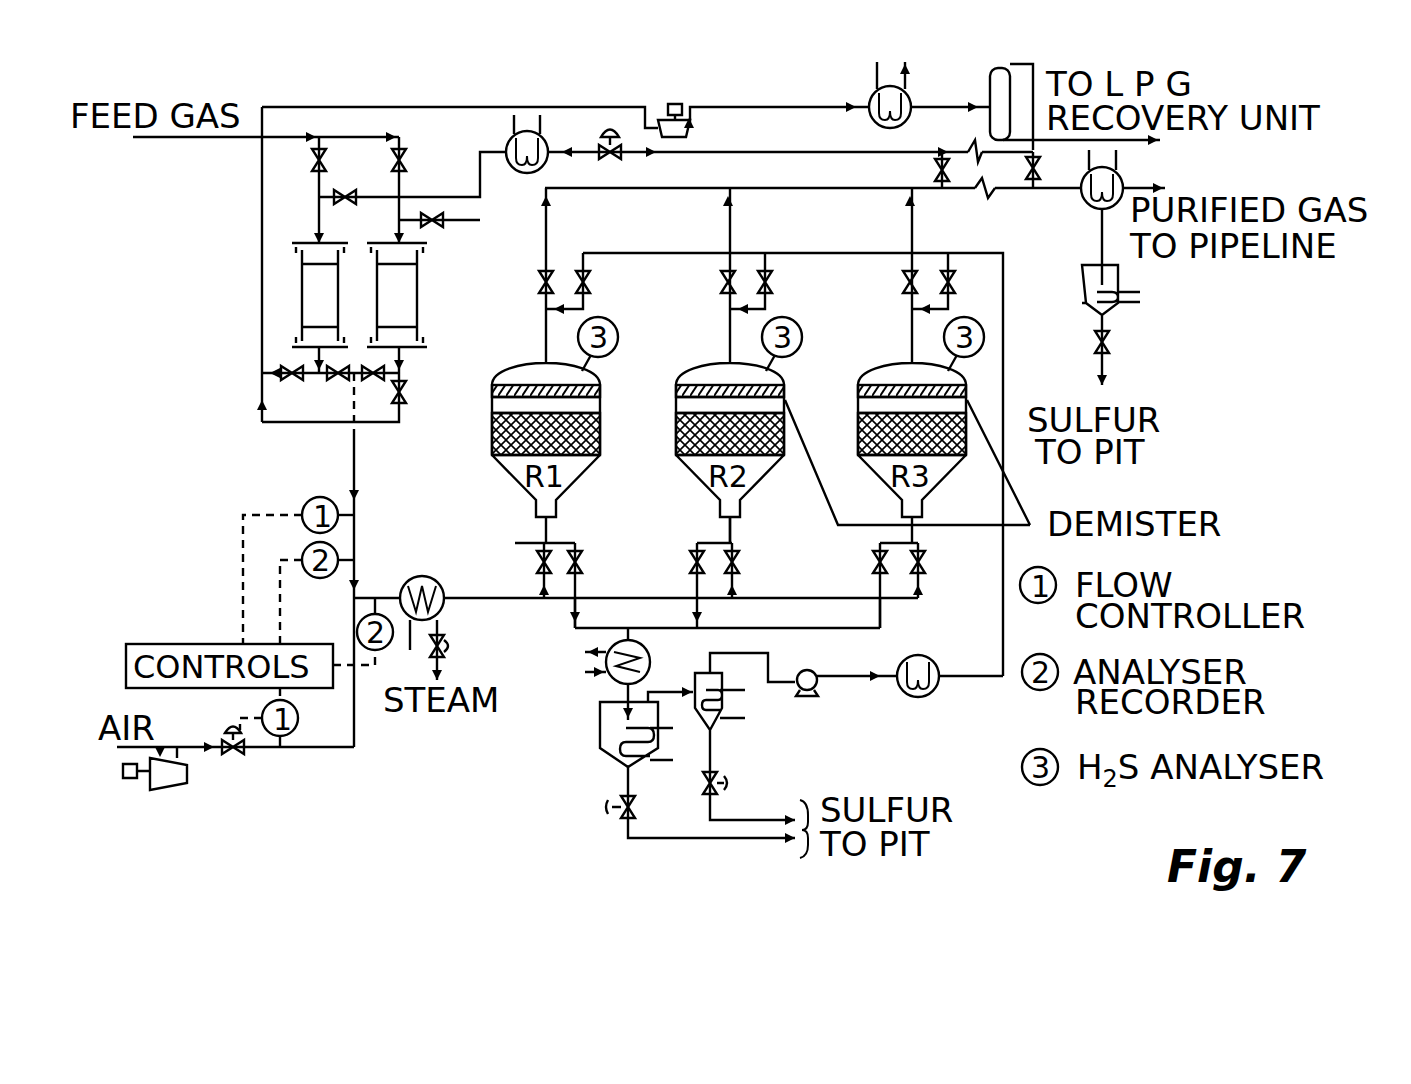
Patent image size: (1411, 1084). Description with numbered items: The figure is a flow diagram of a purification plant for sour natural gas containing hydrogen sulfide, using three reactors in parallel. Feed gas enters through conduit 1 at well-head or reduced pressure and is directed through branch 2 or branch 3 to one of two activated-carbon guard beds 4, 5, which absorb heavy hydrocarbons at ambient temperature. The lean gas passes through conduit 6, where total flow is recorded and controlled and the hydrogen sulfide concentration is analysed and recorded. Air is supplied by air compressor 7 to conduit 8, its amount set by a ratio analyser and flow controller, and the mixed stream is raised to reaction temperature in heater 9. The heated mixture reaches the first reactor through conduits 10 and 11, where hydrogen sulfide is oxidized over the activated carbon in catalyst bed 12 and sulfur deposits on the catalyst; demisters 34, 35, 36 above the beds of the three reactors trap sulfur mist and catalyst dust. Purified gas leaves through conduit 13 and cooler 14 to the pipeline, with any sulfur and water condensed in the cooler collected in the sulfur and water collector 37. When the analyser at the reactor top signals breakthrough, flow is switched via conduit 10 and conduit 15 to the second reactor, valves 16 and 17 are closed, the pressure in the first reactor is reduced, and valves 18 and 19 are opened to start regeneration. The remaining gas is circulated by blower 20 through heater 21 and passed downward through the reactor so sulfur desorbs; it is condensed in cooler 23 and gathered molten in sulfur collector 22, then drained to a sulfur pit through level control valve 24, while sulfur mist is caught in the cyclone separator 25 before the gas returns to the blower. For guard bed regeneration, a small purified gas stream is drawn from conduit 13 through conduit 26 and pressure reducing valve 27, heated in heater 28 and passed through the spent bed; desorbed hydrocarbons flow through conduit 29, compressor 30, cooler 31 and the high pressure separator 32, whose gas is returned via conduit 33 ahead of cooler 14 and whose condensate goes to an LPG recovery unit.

The conduit 1 is at (212, 139).
The branch 2 is at (319, 224).
The branch 3 is at (399, 228).
The guard bed 4 is at (302, 310).
The guard bed 5 is at (377, 310).
The conduit 6 is at (368, 466).
The air compressor 7 is at (187, 780).
The conduit 8 is at (290, 752).
The heater 9 is at (430, 578).
The conduit 10 is at (530, 600).
The conduit 11 is at (537, 518).
The catalyst bed 12 is at (520, 434).
The conduit 13 is at (618, 192).
The cooler 14 is at (1082, 199).
The conduit 15 is at (747, 518).
The valve 16 is at (516, 570).
The valve 17 is at (519, 282).
The valve 18 is at (603, 585).
The valve 19 is at (598, 283).
The blower 20 is at (813, 686).
The heater 21 is at (935, 694).
The sulfur collector 22 is at (600, 730).
The cooler 23 is at (648, 668).
The level control valve 24 is at (610, 806).
The cyclone separator 25 is at (722, 737).
The conduit 26 is at (750, 150).
The pressure reducing valve 27 is at (618, 160).
The heater 28 is at (516, 172).
The conduit 29 is at (468, 98).
The compressor 30 is at (680, 104).
The cooler 31 is at (868, 95).
The high pressure separator 32 is at (989, 78).
The conduit 33 is at (1036, 76).
The demister 34 is at (515, 378).
The demister 35 is at (699, 378).
The demister 36 is at (881, 378).
The sulfur and water collector 37 is at (1082, 305).